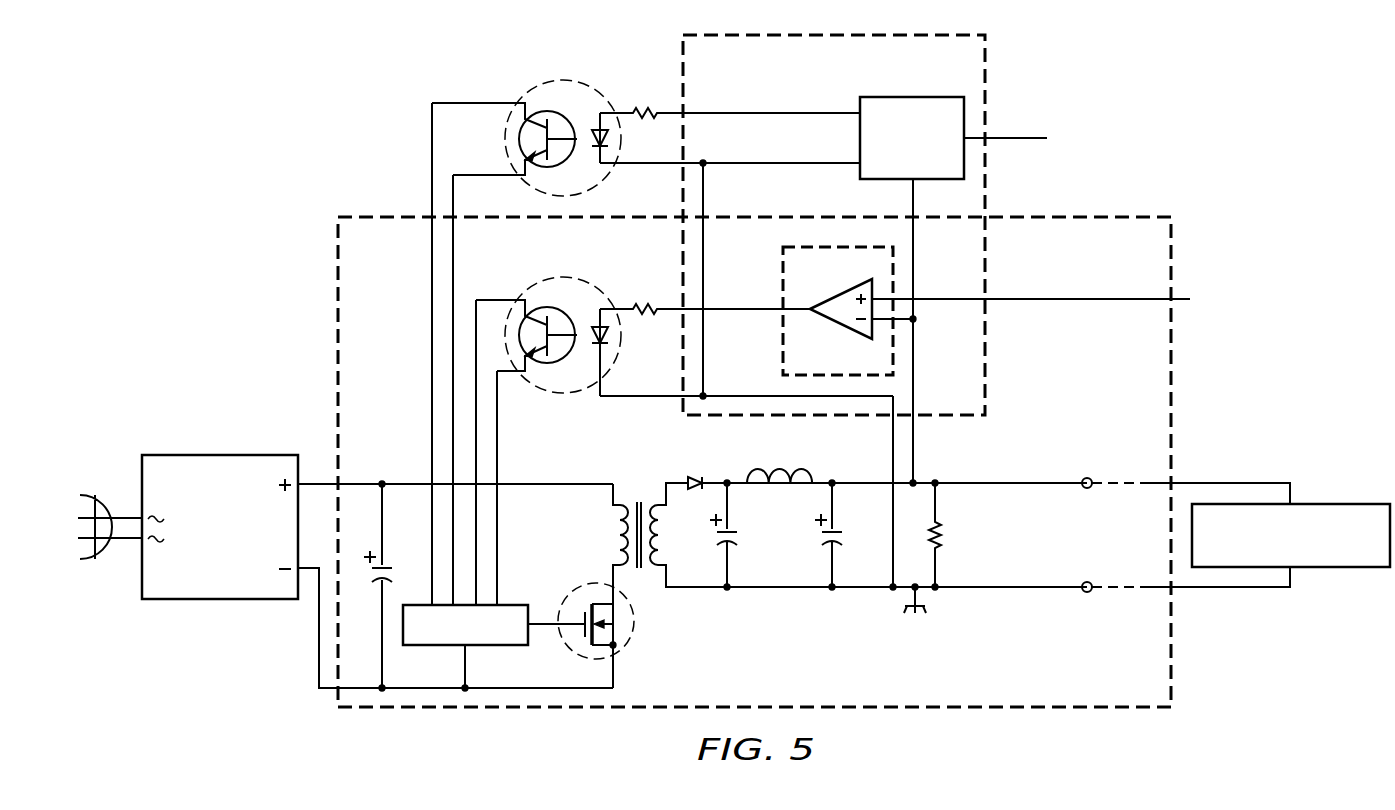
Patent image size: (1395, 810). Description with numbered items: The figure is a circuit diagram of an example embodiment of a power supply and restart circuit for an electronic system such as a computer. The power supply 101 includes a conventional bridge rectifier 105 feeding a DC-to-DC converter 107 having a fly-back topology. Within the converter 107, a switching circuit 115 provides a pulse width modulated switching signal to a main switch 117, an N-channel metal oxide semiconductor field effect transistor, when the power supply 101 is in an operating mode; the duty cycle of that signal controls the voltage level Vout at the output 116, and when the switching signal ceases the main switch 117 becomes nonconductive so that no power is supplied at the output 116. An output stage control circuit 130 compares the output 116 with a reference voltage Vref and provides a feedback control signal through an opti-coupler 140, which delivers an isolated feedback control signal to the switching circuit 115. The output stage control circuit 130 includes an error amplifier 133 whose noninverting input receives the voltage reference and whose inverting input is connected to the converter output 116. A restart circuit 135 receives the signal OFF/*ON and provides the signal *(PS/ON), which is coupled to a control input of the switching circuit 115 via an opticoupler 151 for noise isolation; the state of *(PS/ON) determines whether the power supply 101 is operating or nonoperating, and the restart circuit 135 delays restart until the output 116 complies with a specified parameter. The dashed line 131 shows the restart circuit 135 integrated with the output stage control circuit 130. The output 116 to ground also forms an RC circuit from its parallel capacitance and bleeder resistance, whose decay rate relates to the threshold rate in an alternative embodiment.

The power supply 101 is at (195, 248).
The bridge rectifier 105 is at (221, 600).
The DC-to-DC converter 107 is at (338, 335).
The switching circuit 115 is at (512, 605).
The output 116 is at (1090, 478).
The main switch 117 is at (630, 640).
The output stage control circuit 130 is at (783, 272).
The dashed line 131 is at (985, 80).
The error amplifier 133 is at (840, 322).
The restart circuit 135 is at (912, 97).
The opti-coupler 140 is at (554, 279).
The opticoupler 151 is at (554, 82).